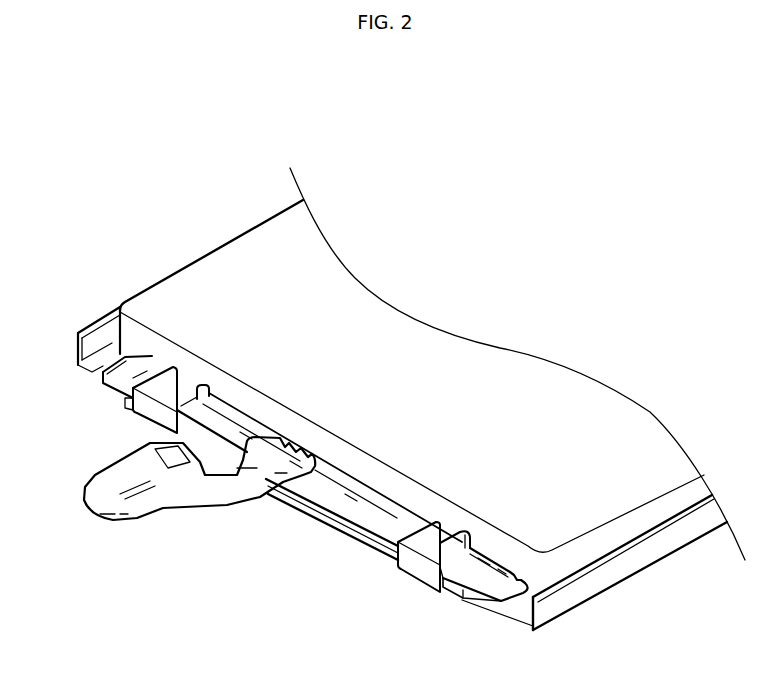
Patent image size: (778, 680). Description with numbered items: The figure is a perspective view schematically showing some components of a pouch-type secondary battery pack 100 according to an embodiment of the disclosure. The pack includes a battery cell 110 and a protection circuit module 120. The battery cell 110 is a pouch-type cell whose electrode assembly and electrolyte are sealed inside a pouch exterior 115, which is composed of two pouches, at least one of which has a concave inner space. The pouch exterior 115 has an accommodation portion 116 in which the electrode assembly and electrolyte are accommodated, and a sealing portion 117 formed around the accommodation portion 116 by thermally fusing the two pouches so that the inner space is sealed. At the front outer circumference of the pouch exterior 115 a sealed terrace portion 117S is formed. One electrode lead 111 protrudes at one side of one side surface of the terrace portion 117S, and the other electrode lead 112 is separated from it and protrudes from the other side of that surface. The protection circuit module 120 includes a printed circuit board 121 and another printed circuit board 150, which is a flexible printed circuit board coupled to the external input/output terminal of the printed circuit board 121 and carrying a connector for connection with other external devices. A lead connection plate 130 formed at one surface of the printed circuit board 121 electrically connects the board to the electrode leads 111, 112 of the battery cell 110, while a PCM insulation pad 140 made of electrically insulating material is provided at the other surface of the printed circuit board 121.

The pouch-type secondary battery pack 100 is at (165, 95).
The battery cell 110 is at (432, 344).
The electrode lead 111 is at (148, 413).
The electrode lead 112 is at (410, 567).
The pouch exterior 115 is at (75, 326).
The accommodation portion 116 is at (228, 288).
The sealing portion 117 is at (622, 567).
The terrace portion 117S is at (102, 360).
The protection circuit module 120 is at (469, 608).
The printed circuit board 121 is at (487, 587).
The lead connection plate 130 is at (202, 380).
The PCM insulation pad 140 is at (303, 507).
The another printed circuit board 150 is at (170, 492).